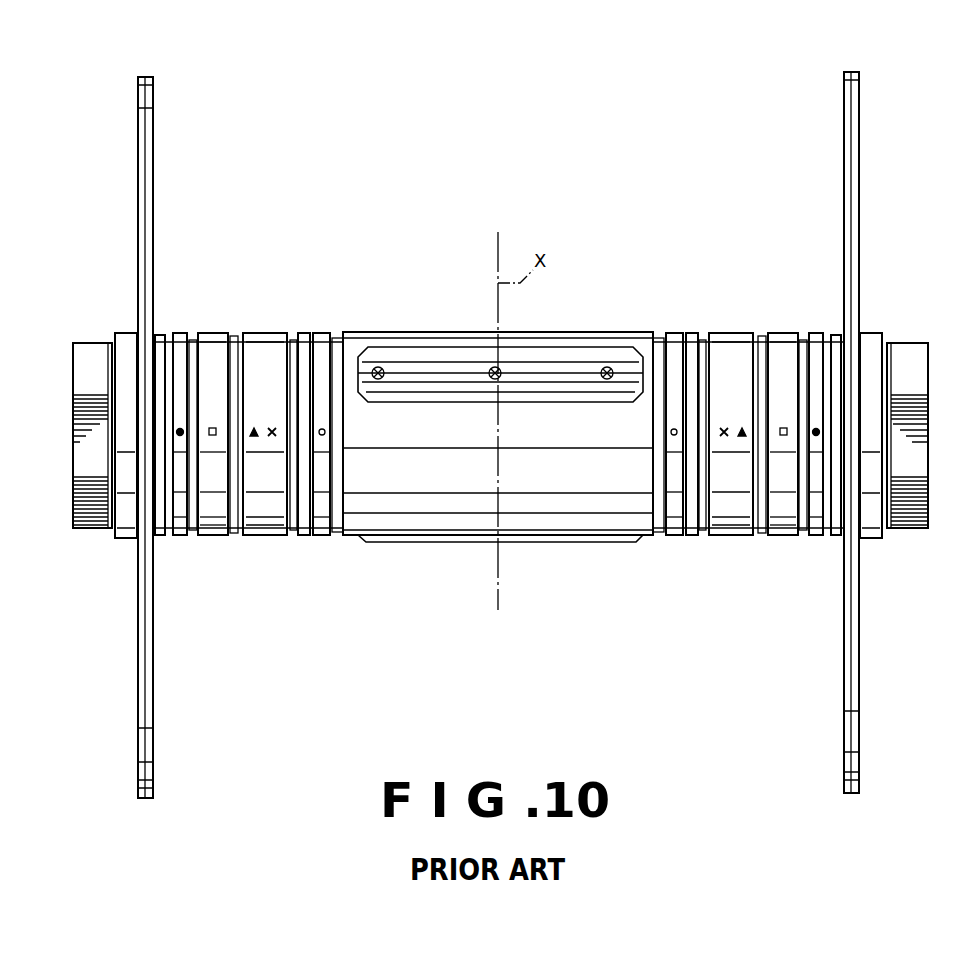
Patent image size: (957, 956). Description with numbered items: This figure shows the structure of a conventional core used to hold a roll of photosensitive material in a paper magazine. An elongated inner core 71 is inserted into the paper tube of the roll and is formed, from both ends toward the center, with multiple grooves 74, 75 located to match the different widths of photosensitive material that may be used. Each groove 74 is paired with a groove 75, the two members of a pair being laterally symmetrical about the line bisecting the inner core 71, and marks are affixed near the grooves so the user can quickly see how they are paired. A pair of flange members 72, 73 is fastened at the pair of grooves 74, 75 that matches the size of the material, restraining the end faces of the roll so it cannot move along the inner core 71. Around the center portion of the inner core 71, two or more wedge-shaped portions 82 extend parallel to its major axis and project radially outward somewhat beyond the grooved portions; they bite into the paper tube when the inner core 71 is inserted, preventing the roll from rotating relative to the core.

The inner core 71 is at (646, 332).
The flange member 72 is at (139, 97).
The flange member 73 is at (859, 90).
The groove 74 is at (238, 314).
The groove 75 is at (774, 304).
The wedge-shaped portion 82 is at (427, 347).